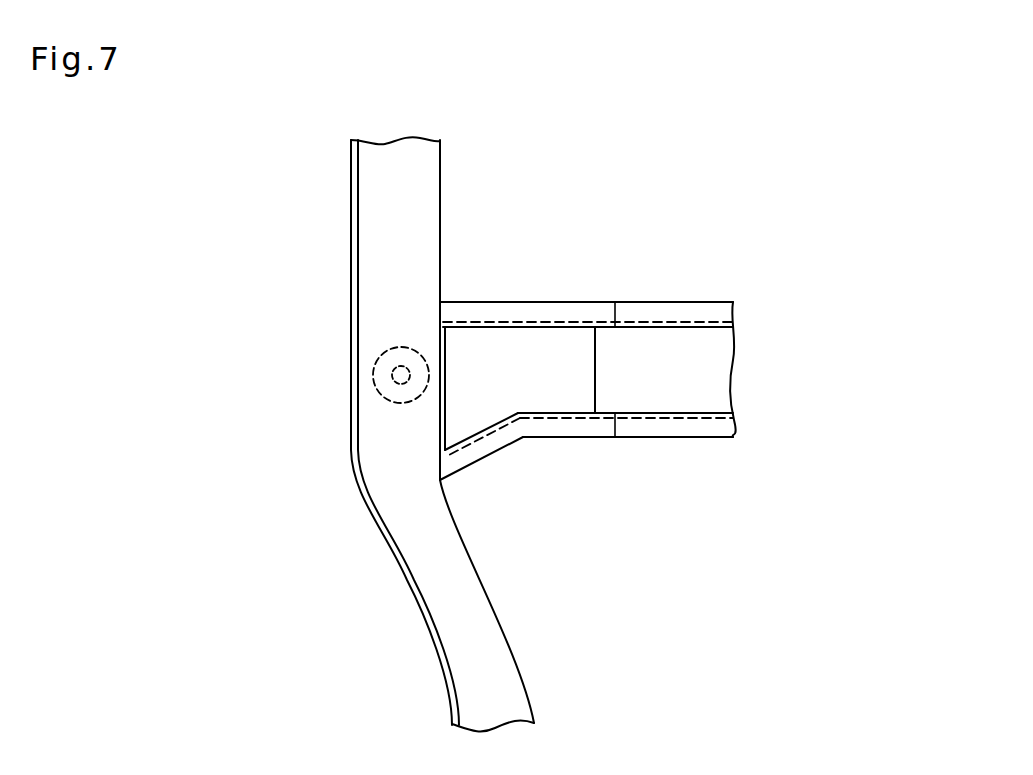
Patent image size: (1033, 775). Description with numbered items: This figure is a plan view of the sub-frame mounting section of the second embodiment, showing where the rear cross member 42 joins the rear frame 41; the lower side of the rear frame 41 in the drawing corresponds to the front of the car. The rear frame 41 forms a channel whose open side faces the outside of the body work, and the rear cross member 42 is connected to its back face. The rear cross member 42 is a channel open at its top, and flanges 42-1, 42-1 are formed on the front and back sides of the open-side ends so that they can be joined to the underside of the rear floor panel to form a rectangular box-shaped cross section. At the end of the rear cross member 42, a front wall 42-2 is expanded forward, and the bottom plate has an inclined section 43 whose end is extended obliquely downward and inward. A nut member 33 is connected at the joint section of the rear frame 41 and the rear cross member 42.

The rear frame 41 is at (383, 263).
The nut member 33 is at (405, 402).
The rear cross member 42 is at (668, 311).
The inclined section 43 is at (549, 348).
The flanges 42-1 is at (717, 428).
The front wall 42-2 is at (503, 426).